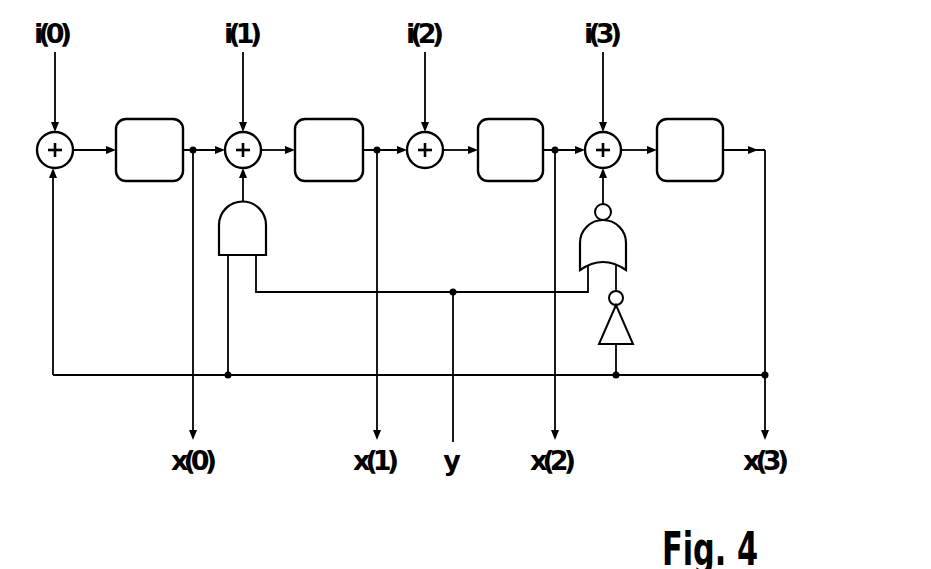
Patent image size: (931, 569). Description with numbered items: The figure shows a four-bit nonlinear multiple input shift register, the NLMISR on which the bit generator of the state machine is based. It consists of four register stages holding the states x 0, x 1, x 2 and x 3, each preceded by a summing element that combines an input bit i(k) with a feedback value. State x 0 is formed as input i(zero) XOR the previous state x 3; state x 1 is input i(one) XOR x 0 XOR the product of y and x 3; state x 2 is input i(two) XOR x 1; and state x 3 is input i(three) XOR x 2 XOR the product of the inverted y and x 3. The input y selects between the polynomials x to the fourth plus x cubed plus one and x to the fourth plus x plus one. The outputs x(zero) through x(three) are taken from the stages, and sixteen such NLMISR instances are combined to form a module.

The state x0 0 is at (149, 150).
The state x1 1 is at (329, 150).
The state x2 2 is at (510, 150).
The state x3 3 is at (690, 150).